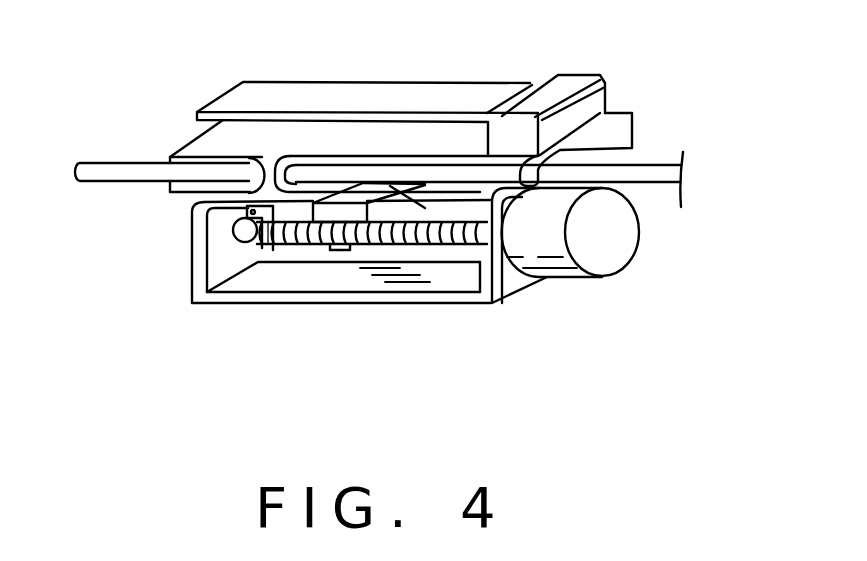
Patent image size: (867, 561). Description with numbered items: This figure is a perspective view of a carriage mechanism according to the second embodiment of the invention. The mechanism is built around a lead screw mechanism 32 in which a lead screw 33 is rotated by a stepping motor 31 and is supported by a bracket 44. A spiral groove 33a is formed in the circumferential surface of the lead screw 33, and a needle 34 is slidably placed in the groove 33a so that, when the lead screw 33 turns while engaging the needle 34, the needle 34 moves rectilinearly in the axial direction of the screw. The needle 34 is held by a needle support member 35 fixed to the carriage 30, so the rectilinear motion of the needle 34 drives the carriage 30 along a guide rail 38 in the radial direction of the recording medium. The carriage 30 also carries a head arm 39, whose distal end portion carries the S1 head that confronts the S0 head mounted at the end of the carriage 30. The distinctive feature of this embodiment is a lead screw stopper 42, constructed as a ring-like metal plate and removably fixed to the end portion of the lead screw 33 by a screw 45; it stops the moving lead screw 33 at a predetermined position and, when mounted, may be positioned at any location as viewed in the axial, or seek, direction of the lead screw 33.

The carriage 30 is at (187, 150).
The stepping motor 31 is at (558, 258).
The lead screw mechanism 32 is at (393, 303).
The lead screw 33 is at (423, 247).
The spiral groove 33a is at (287, 243).
The needle 34 is at (350, 255).
The needle support member 35 is at (425, 190).
The guide rail 38 is at (651, 177).
The head arm 39 is at (400, 93).
The lead screw stopper 42 is at (233, 230).
The bracket 44 is at (200, 268).
The screw 45 is at (250, 212).